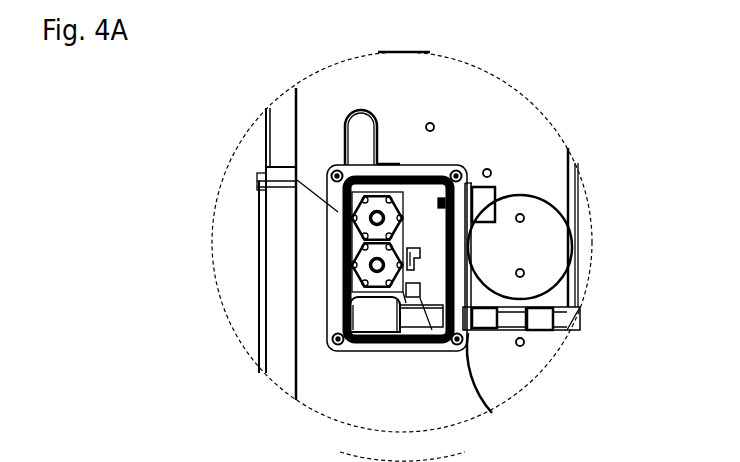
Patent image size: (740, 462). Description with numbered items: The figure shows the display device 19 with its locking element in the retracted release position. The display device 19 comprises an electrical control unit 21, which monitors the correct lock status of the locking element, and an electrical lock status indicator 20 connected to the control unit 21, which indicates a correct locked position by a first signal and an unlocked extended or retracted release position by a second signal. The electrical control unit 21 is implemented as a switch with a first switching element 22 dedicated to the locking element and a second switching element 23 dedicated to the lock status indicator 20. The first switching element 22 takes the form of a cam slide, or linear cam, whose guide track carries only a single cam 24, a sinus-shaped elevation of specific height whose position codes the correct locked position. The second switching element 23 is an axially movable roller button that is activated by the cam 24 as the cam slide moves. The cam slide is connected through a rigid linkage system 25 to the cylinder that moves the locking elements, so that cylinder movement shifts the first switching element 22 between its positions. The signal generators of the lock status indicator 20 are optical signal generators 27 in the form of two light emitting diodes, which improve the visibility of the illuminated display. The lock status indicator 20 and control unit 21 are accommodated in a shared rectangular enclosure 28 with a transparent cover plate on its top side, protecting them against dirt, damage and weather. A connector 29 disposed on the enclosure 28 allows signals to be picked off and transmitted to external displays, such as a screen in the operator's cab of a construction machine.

The display device 19 is at (404, 128).
The electrical lock status indicator 20 is at (501, 204).
The electrical control unit 21 is at (413, 216).
The first switching element 22 is at (370, 312).
The second switching element 23 is at (424, 300).
The cam 24 is at (392, 300).
The rigid linkage system 25 is at (567, 318).
The optical signal generators 27 is at (370, 218).
The enclosure 28 is at (268, 168).
The connector 29 is at (498, 198).